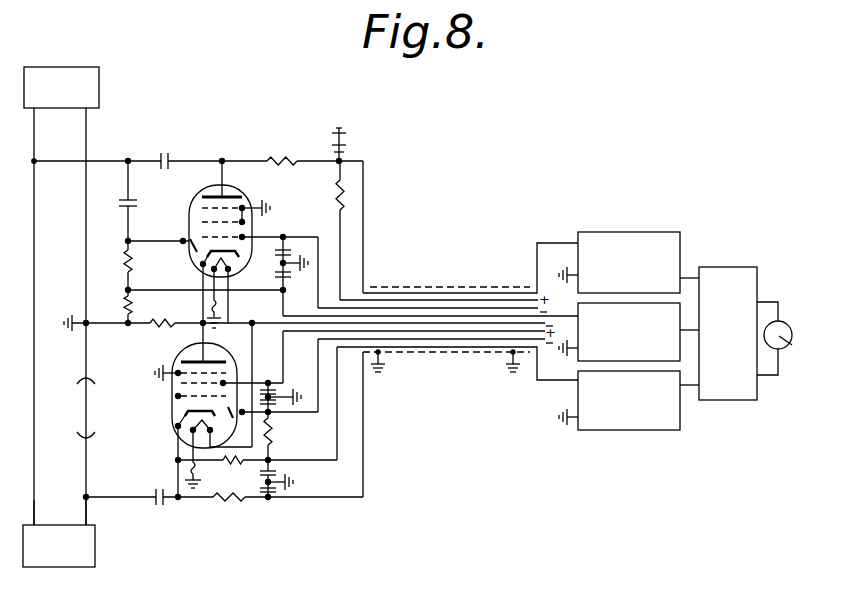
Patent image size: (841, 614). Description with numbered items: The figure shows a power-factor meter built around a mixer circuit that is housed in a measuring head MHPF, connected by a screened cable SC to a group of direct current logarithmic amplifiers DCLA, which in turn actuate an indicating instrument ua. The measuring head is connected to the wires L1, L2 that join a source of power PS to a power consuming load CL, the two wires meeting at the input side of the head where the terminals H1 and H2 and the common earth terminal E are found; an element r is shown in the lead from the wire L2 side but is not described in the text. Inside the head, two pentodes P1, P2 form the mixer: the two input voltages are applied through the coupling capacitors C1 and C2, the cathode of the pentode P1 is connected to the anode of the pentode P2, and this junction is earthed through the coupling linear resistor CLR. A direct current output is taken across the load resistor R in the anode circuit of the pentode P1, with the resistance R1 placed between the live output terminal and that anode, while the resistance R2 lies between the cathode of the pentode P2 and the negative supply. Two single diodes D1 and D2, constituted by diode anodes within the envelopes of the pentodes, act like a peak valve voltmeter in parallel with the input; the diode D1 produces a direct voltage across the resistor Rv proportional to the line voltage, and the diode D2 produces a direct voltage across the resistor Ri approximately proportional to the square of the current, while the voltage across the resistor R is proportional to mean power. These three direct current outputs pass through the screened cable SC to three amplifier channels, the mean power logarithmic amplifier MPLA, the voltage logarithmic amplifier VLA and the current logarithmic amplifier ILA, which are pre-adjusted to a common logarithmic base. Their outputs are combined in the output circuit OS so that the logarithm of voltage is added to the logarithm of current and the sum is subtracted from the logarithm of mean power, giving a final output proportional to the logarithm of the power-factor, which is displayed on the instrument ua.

The source of power PS is at (78, 82).
The input terminal H1 is at (85, 163).
The coupling capacitor C1 is at (213, 151).
The resistance R1 is at (315, 152).
The load resistor R is at (331, 230).
The pentode P1 is at (158, 233).
The diode D1 is at (189, 250).
The common earth terminal E is at (98, 322).
The resistor Rv is at (116, 309).
The coupling linear resistor CLR is at (340, 314).
The resistance r is at (89, 408).
The input terminal H2 is at (110, 493).
The wire L2 is at (43, 512).
The wire L1 is at (96, 512).
The power consuming load CL is at (59, 546).
The coupling capacitor C2 is at (179, 513).
The resistance R2 is at (288, 510).
The pentode P2 is at (188, 395).
The diode D2 is at (240, 424).
The resistor Ri is at (277, 444).
The screened cable SC is at (446, 423).
The mean power logarithmic amplifier MPLA is at (619, 262).
The voltage logarithmic amplifier VLA is at (619, 332).
The current logarithmic amplifier ILA is at (619, 400).
The output circuit OS is at (718, 333).
The indicating instrument ua is at (790, 345).
The direct current logarithmic amplifiers DCLA is at (572, 493).
The measuring head MHPF is at (233, 579).